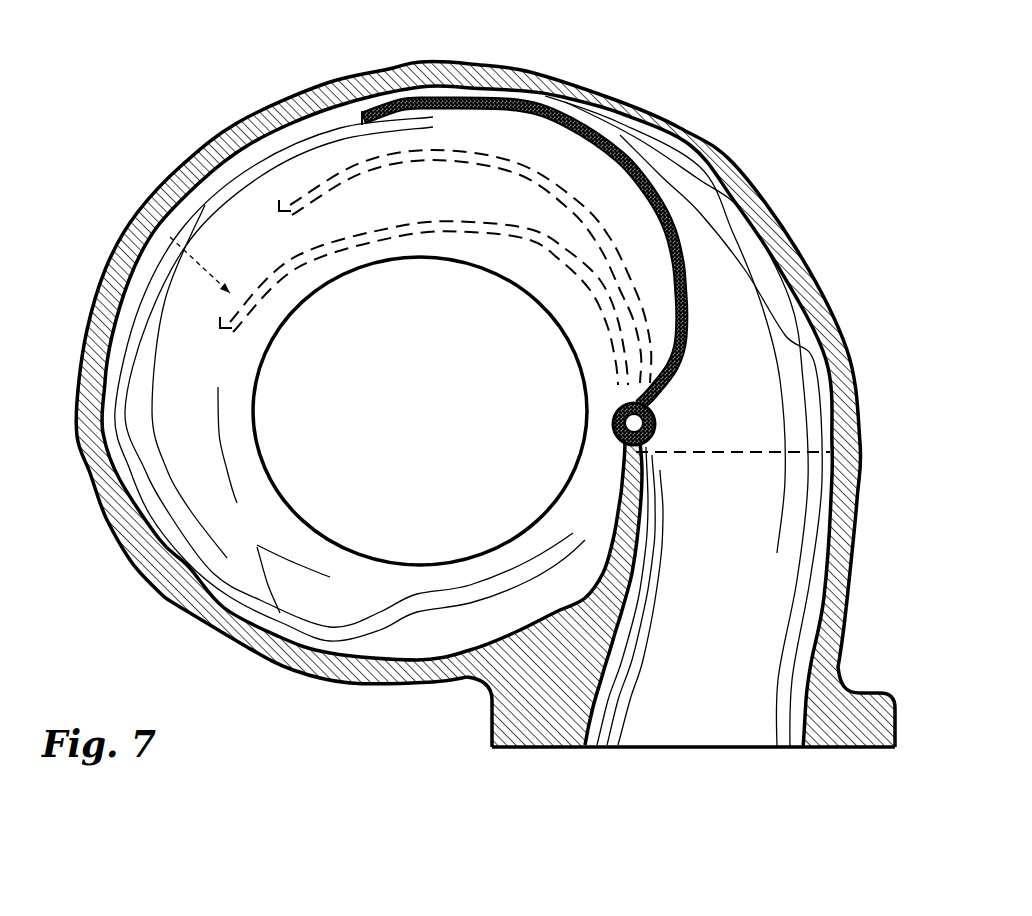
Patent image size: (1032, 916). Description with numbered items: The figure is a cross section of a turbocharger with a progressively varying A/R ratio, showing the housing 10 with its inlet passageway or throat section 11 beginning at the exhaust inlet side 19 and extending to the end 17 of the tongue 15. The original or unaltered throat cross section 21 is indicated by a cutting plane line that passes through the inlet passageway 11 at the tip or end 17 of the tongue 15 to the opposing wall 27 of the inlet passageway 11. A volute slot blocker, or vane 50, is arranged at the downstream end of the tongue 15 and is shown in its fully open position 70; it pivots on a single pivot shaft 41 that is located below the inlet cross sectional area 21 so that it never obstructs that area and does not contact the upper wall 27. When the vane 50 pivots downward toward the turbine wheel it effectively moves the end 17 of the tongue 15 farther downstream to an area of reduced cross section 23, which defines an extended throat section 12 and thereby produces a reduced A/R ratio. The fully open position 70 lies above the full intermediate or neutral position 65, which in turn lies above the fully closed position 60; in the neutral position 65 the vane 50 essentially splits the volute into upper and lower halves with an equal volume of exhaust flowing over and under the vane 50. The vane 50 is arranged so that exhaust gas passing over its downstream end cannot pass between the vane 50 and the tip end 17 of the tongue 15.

The housing 10 is at (677, 128).
The inlet passageway or throat section 11 is at (737, 582).
The extended throat section 12 is at (240, 217).
The tongue 15 is at (648, 498).
The end of the tongue 17 is at (628, 445).
The exhaust inlet side 19 is at (768, 748).
The throat cross section 21 is at (748, 448).
The reduced cross section 23 is at (187, 310).
The opposing wall 27 is at (748, 238).
The pivot shaft 41 is at (616, 418).
The vane 50 is at (545, 108).
The fully closed position 60 is at (140, 208).
The neutral position 65 is at (290, 183).
The fully open position 70 is at (370, 107).